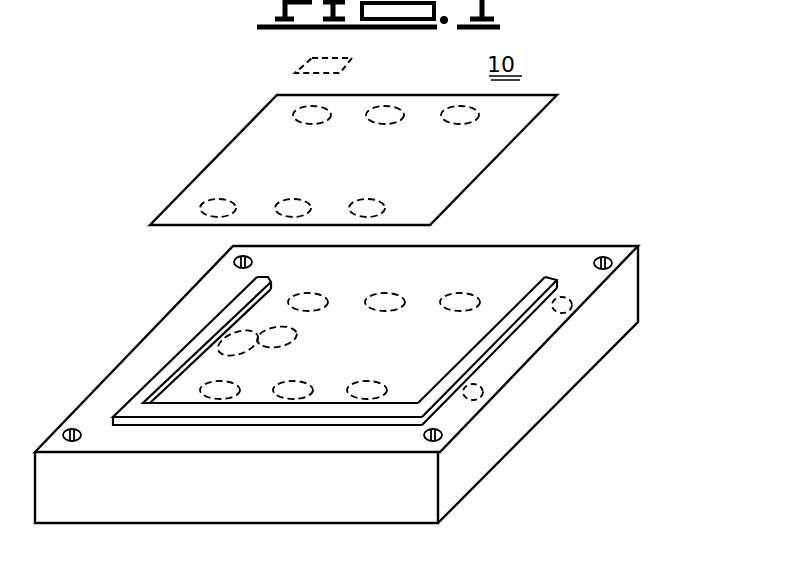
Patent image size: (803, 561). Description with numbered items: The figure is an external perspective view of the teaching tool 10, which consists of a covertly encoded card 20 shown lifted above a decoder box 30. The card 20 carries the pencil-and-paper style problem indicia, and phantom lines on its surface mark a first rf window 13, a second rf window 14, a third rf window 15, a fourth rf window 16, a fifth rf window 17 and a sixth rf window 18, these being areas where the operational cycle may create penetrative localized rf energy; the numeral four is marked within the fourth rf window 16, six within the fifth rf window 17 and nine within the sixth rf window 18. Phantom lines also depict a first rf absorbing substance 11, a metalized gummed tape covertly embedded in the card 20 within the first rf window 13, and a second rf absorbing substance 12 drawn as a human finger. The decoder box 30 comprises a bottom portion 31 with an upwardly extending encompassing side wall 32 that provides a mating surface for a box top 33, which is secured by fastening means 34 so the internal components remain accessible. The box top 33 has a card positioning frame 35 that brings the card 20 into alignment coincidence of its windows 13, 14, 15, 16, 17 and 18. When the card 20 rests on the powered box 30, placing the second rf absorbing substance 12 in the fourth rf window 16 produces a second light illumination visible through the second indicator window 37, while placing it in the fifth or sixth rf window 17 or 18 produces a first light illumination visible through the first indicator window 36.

The teaching tool 10 is at (505, 68).
The first rf absorbing substance 11 is at (308, 64).
The second rf absorbing substance 12 is at (291, 341).
The first rf window 13 is at (290, 308).
The second rf window 14 is at (392, 323).
The third rf window 15 is at (452, 323).
The fourth rf window 16 is at (200, 207).
The fifth rf window 17 is at (276, 207).
The sixth rf window 18 is at (390, 205).
The covertly encoded card 20 is at (507, 152).
The decoder box 30 is at (160, 324).
The bottom portion 31 is at (329, 503).
The side wall 32 is at (272, 495).
The box top 33 is at (314, 449).
The fastening means 34 is at (232, 257).
The card positioning frame 35 is at (482, 357).
The first indicator window 36 is at (484, 394).
The second indicator window 37 is at (574, 305).